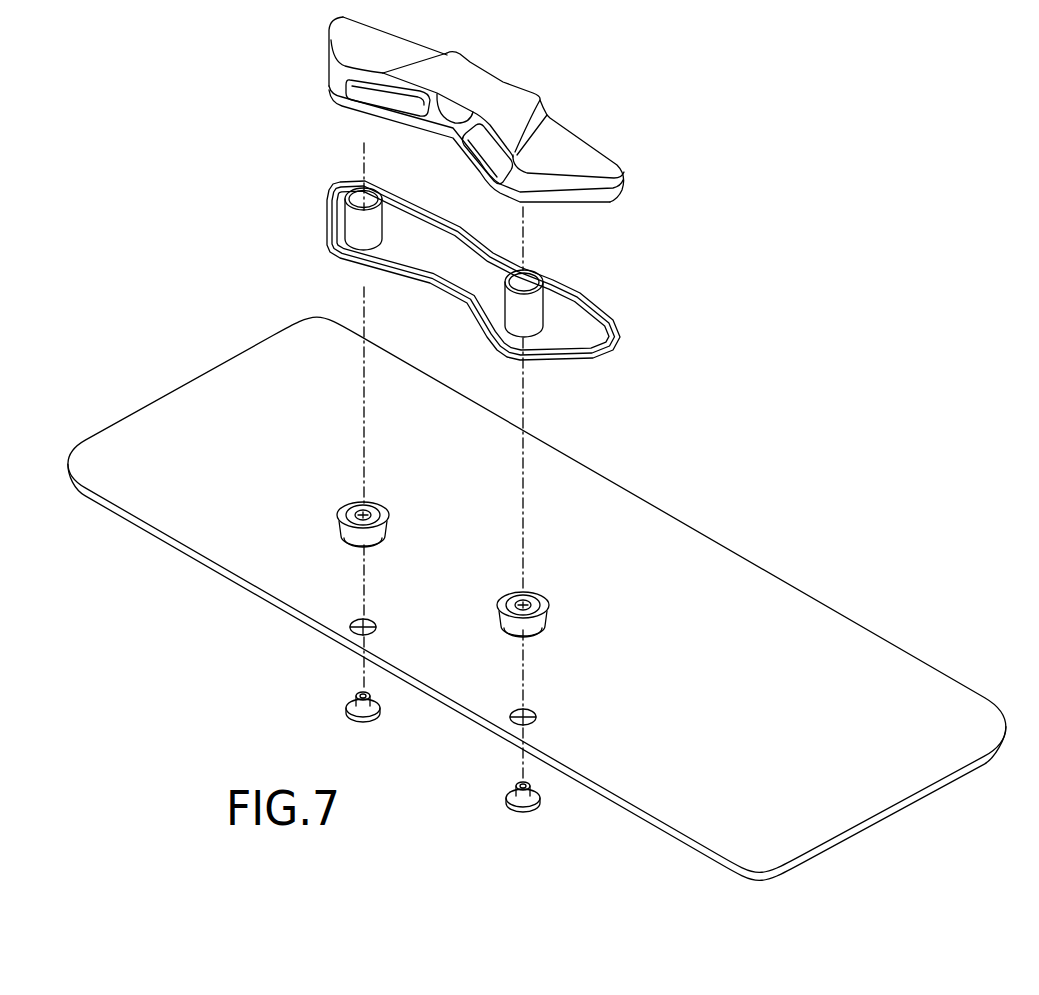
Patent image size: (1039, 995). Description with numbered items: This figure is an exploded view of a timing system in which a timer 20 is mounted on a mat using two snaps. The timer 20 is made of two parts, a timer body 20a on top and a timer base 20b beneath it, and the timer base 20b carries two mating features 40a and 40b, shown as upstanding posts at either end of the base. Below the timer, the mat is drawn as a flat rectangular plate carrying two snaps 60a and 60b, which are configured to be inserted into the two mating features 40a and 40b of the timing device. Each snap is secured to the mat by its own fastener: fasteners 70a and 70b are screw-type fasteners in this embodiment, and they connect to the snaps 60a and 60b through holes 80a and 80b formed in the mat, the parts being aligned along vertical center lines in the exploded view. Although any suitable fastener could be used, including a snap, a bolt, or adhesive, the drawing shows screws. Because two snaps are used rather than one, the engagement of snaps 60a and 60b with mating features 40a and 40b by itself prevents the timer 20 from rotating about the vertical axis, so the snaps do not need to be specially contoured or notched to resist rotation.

The timer 20 is at (622, 197).
The timer body 20a is at (330, 36).
The timer base 20b is at (328, 188).
The mating feature 40a is at (512, 322).
The mating feature 40b is at (353, 233).
The snap 60a is at (390, 529).
The snap 60b is at (551, 620).
The fastener 70a is at (381, 718).
The fastener 70b is at (541, 809).
The hole 80a is at (378, 630).
The hole 80b is at (537, 720).